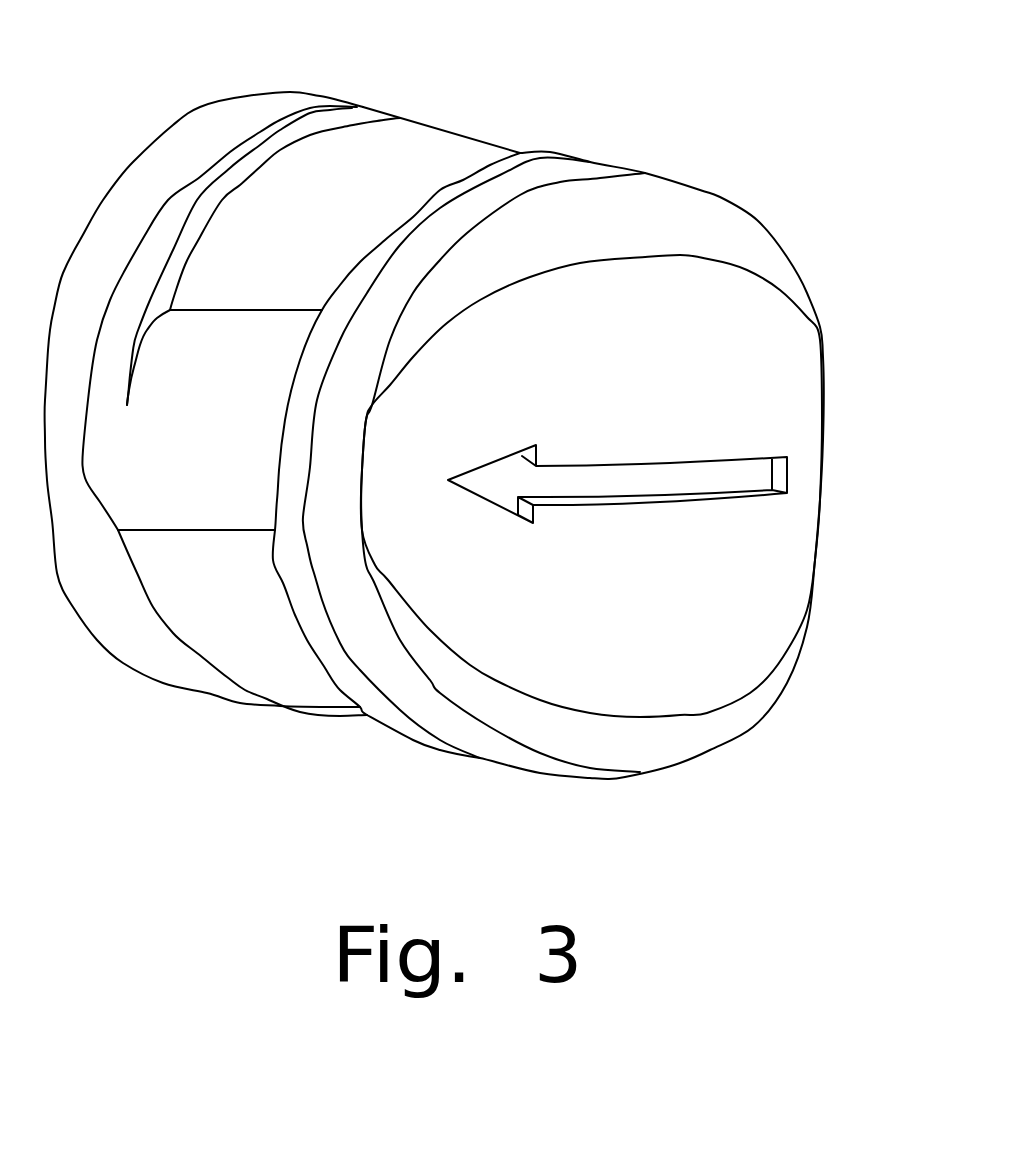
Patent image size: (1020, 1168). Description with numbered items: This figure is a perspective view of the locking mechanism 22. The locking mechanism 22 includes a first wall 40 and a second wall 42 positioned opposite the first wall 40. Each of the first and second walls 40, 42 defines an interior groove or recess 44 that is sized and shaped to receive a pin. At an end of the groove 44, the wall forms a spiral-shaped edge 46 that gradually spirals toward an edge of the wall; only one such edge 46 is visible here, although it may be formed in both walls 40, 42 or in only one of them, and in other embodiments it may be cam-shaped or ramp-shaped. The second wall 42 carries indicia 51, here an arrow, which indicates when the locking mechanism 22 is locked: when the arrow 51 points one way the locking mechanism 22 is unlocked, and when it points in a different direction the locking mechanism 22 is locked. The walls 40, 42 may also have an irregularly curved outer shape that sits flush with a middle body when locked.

The locking mechanism 22 is at (467, 392).
The first wall 40 is at (247, 96).
The second wall 42 is at (744, 218).
The interior groove 44 is at (213, 185).
The spiral-shaped edge 46 is at (137, 340).
The indicia 51 is at (757, 477).